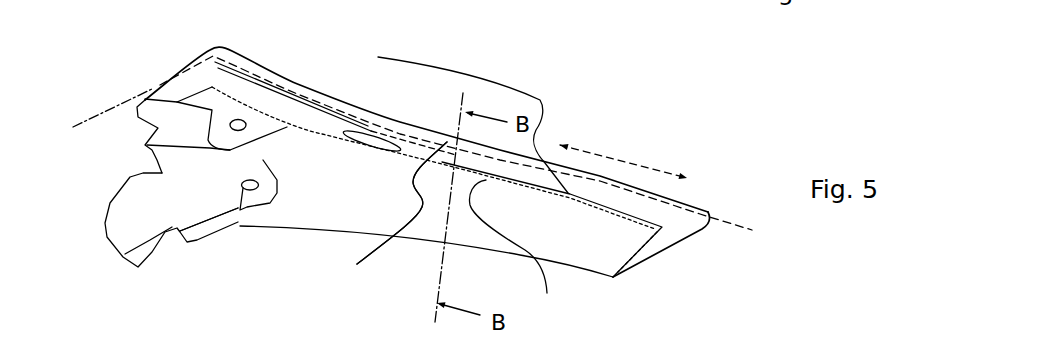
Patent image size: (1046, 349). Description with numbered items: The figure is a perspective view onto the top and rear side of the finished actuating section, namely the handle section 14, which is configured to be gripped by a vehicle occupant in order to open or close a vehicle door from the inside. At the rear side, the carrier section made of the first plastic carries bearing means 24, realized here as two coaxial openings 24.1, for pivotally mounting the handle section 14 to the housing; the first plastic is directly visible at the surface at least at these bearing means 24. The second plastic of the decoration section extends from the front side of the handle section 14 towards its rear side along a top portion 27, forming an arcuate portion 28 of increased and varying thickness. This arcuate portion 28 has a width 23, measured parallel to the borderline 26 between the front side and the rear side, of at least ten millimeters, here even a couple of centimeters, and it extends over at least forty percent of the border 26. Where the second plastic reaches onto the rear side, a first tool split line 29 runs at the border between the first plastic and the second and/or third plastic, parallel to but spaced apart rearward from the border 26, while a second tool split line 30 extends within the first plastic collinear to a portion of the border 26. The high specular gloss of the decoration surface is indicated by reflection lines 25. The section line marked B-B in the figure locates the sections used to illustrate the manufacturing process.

The handle section 14 is at (146, 50).
The width 23 is at (653, 167).
The bearing means 24 is at (240, 212).
The coaxial openings 24.1 is at (209, 219).
The reflection lines 25 is at (373, 137).
The borderline between front side and rear side 26 is at (733, 222).
The top portion 27 is at (447, 100).
The arcuate portion 28 is at (402, 203).
The first tool split line 29 is at (511, 247).
The second tool split line 30 is at (386, 218).